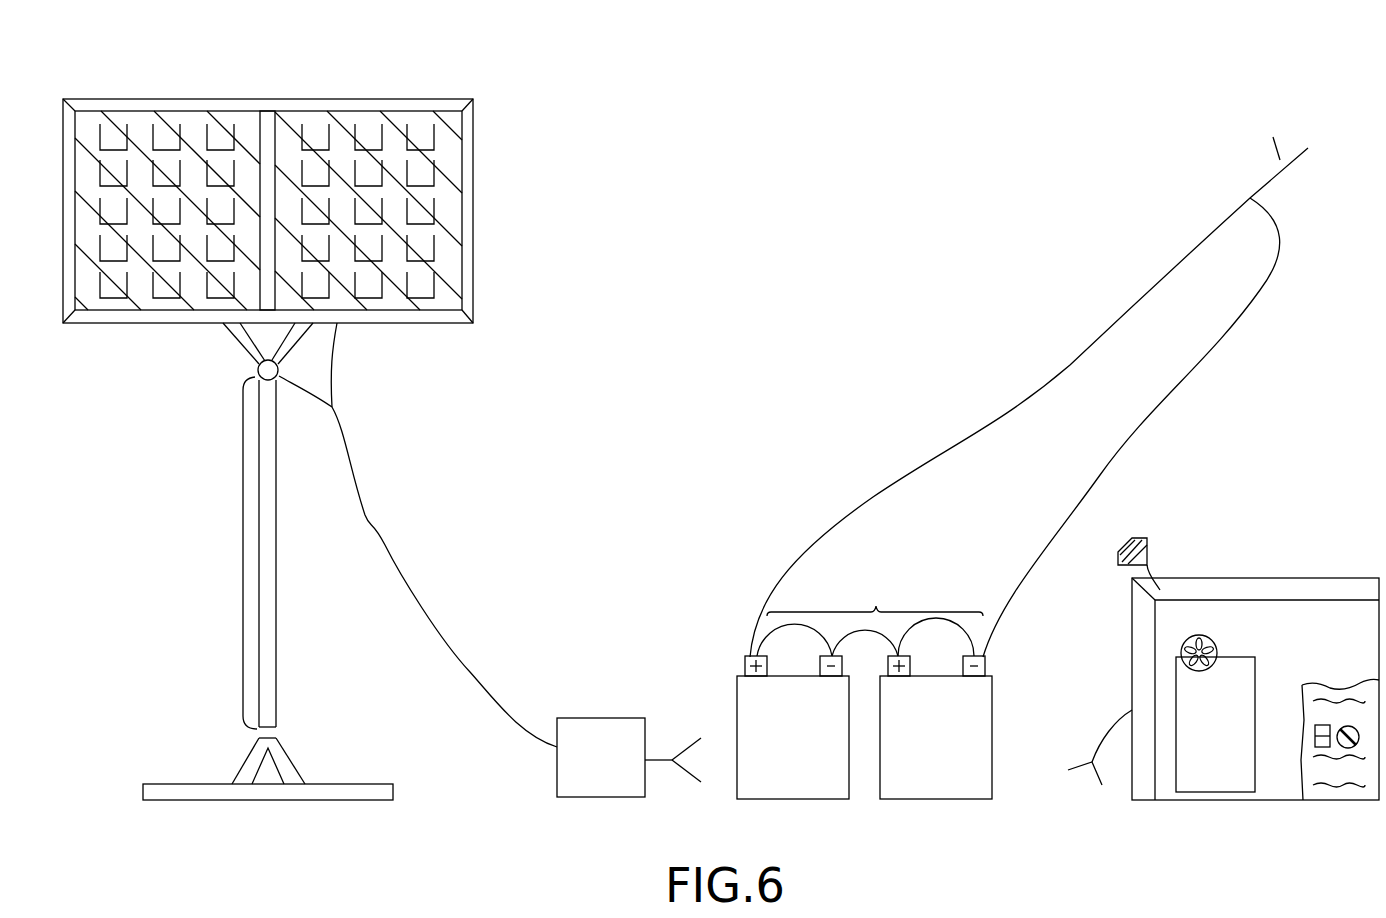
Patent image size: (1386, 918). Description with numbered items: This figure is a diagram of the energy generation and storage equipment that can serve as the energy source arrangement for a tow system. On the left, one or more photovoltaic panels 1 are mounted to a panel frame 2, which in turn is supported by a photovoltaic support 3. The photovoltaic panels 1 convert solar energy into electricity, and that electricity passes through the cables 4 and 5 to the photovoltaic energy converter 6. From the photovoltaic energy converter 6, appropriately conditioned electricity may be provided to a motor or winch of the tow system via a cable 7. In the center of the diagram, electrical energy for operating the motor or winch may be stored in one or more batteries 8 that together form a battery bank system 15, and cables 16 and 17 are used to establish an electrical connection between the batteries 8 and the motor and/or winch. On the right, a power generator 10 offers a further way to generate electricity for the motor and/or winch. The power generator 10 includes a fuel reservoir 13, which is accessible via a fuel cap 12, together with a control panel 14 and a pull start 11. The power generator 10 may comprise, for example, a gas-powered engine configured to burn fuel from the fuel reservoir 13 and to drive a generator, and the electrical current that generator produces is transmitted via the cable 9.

The photovoltaic panel 1 is at (218, 148).
The panel frame 2 is at (425, 105).
The photovoltaic support 3 is at (247, 565).
The cable 4 is at (333, 384).
The cable 5 is at (408, 582).
The photovoltaic energy converter 6 is at (601, 757).
The cable 7 is at (667, 760).
The battery 8 is at (864, 708).
The cable 9 is at (1090, 762).
The power generator 10 is at (1290, 610).
The pull start 11 is at (1143, 538).
The fuel cap 12 is at (1215, 648).
The fuel reservoir 13 is at (1215, 724).
The control panel 14 is at (1333, 690).
The battery bank system 15 is at (875, 595).
The cable 16 is at (1042, 397).
The cable 17 is at (1273, 137).